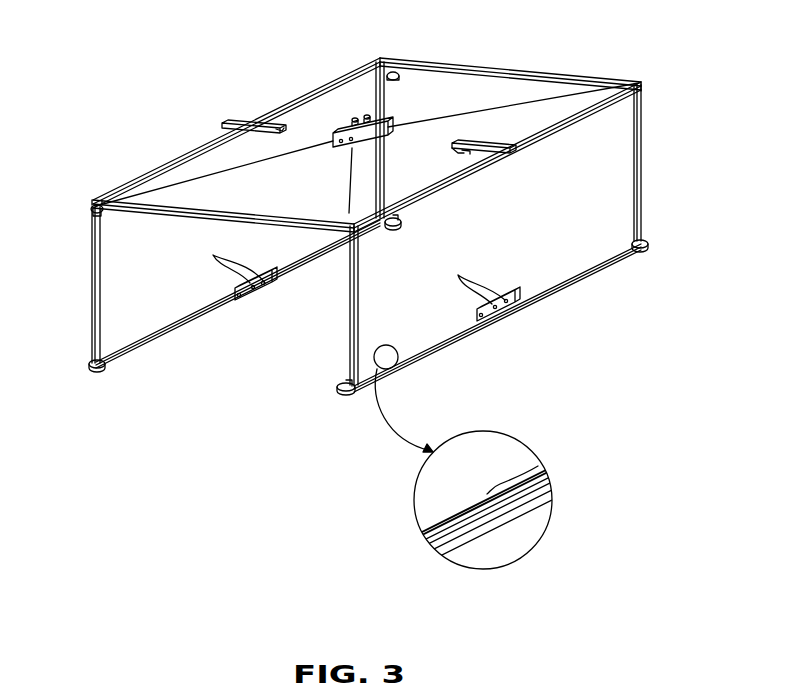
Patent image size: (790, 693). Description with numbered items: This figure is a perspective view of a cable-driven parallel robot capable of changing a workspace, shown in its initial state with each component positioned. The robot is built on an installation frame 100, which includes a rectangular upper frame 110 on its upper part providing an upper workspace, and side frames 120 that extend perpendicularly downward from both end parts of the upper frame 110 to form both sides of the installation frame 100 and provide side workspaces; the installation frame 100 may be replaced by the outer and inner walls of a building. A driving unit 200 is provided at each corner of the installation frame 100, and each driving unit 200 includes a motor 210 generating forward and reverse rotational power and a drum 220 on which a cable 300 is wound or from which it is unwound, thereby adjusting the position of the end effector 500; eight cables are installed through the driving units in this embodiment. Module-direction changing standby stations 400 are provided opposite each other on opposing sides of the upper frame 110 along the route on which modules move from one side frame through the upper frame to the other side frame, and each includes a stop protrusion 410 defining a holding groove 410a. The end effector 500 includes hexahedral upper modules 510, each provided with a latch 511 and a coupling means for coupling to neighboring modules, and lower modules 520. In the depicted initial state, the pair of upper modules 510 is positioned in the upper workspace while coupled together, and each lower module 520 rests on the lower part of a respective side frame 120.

The installation frame 100 is at (378, 308).
The upper frame 110 is at (590, 76).
The side frame 120 is at (644, 116).
The driving unit 200 is at (66, 178).
The motor 210 is at (88, 211).
The drum 220 is at (94, 205).
The cable 300 is at (398, 125).
The module-direction changing standby station 400 is at (521, 146).
The stop protrusion 410 is at (472, 158).
The holding groove 410a is at (455, 148).
The end effector 500 is at (379, 188).
The upper module 510 is at (338, 105).
The latch 511 is at (360, 117).
The lower module 520 is at (243, 301).